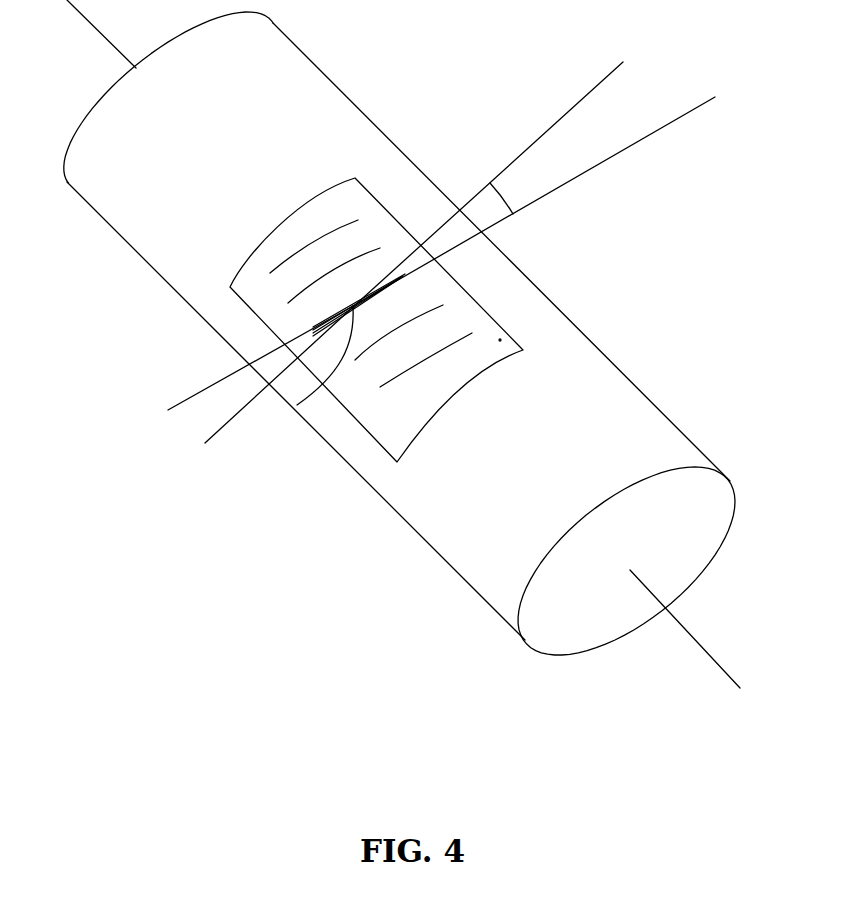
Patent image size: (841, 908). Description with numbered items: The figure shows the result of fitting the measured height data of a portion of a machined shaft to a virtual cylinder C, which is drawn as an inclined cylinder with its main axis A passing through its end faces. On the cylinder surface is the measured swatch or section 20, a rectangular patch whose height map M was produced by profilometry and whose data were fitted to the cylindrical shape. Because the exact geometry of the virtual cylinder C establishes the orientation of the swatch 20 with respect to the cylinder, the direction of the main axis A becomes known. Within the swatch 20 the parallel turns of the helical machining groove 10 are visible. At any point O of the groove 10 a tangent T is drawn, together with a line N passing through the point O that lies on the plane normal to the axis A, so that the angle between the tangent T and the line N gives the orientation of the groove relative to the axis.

The machining groove 10 is at (330, 230).
The swatch or section of the part's surface 20 is at (256, 230).
The line normal to the axis N is at (588, 92).
The tangent to the groove T is at (680, 120).
The height map M is at (500, 340).
The virtual cylinder C is at (738, 502).
The point of the groove O is at (353, 307).
The main axis A is at (708, 657).